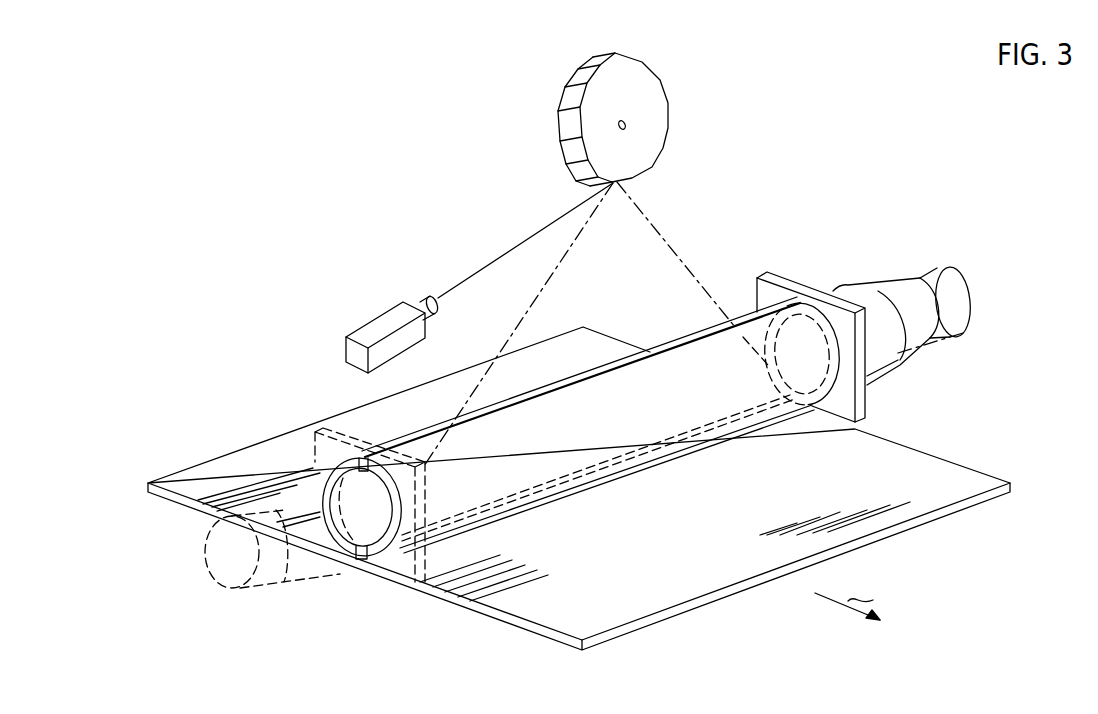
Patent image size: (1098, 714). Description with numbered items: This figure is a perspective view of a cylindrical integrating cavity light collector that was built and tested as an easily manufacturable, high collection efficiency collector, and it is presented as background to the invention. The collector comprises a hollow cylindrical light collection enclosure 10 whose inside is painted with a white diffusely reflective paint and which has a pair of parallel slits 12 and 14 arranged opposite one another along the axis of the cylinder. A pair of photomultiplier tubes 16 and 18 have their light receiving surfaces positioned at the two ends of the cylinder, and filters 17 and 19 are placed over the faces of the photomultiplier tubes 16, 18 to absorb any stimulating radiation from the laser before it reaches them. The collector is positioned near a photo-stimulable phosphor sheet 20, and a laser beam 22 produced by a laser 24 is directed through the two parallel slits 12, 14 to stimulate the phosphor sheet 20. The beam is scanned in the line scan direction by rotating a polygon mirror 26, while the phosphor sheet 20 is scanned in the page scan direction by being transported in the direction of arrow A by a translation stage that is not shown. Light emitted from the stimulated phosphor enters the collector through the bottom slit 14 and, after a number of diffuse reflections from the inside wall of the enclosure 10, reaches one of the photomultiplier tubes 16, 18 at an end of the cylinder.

The hollow cylindrical light collection enclosure 10 is at (815, 407).
The slit 12 is at (388, 444).
The slit 14 is at (354, 562).
The photomultiplier tube 16 is at (840, 284).
The filter 17 is at (762, 274).
The photomultiplier tube 18 is at (297, 586).
The filter 19 is at (320, 428).
The photo-stimulable phosphor sheet 20 is at (937, 463).
The laser beam 22 is at (523, 322).
The laser 24 is at (366, 330).
The polygon mirror 26 is at (667, 90).